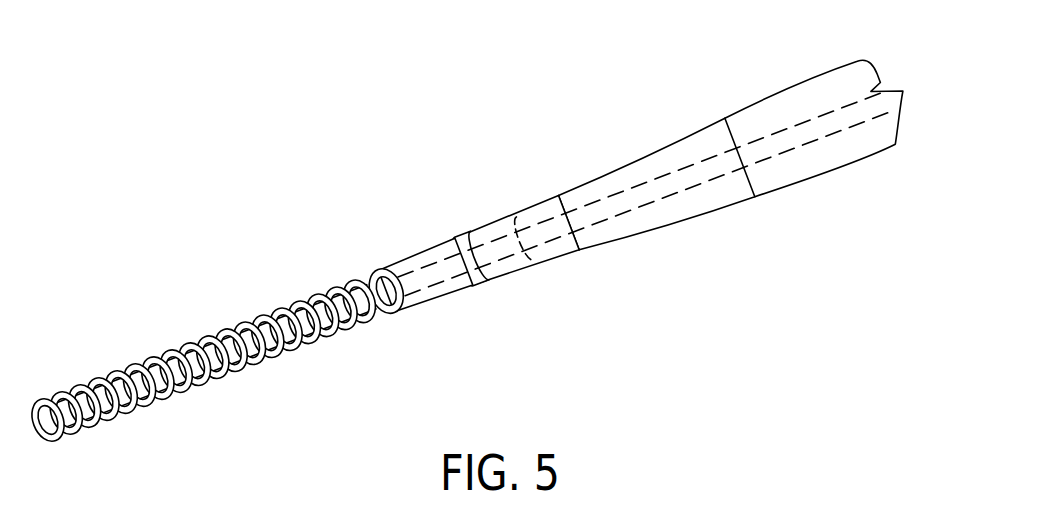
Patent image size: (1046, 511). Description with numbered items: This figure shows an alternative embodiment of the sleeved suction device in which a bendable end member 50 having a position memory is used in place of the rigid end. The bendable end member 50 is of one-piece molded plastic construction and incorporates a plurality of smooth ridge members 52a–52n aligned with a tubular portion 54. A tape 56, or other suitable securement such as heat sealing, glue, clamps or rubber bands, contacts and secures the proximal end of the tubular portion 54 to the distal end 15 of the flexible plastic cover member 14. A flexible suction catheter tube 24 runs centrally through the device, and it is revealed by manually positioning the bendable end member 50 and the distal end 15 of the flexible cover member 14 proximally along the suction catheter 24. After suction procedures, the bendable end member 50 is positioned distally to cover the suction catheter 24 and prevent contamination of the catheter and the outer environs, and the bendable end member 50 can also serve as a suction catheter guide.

The flexible plastic cover member 14 is at (797, 80).
The distal end of the flexible plastic cover member 15 is at (642, 157).
The flexible suction catheter tube 24 is at (443, 284).
The bendable end member 50 is at (293, 281).
The smooth ridge member 52a is at (360, 272).
The smooth ridge member 52n is at (40, 400).
The tubular portion 54 is at (415, 262).
The tape 56 is at (494, 228).